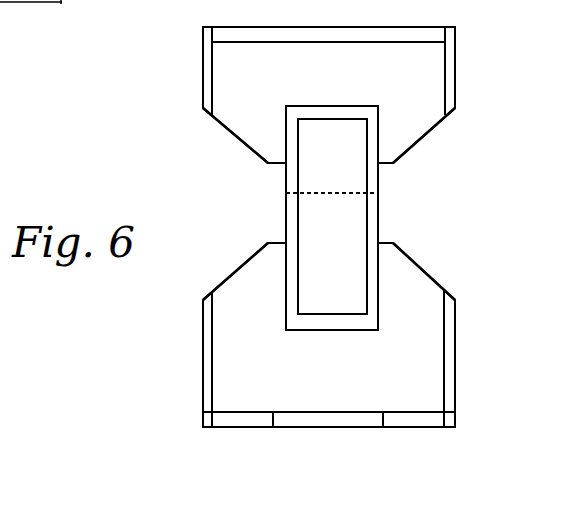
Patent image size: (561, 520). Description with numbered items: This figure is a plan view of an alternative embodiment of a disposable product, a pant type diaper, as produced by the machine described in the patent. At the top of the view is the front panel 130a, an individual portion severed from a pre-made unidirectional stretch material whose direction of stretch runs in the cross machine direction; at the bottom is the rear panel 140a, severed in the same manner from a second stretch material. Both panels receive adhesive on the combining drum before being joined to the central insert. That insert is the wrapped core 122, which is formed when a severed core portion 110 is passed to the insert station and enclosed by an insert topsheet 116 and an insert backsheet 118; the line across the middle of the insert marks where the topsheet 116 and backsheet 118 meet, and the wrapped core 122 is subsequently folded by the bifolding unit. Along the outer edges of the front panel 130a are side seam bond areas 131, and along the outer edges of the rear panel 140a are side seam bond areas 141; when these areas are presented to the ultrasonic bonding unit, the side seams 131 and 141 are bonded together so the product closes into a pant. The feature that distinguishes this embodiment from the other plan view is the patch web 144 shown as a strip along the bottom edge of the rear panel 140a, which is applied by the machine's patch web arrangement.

The core portion 110 is at (348, 221).
The insert topsheet 116 is at (372, 193).
The insert backsheet 118 is at (372, 193).
The wrapped core 122 is at (286, 184).
The front panel 130a is at (252, 80).
The side seam bond area 131 is at (201, 52).
The rear panel 140a is at (258, 358).
The side seam bond area 141 is at (205, 323).
The patch web 144 is at (302, 418).